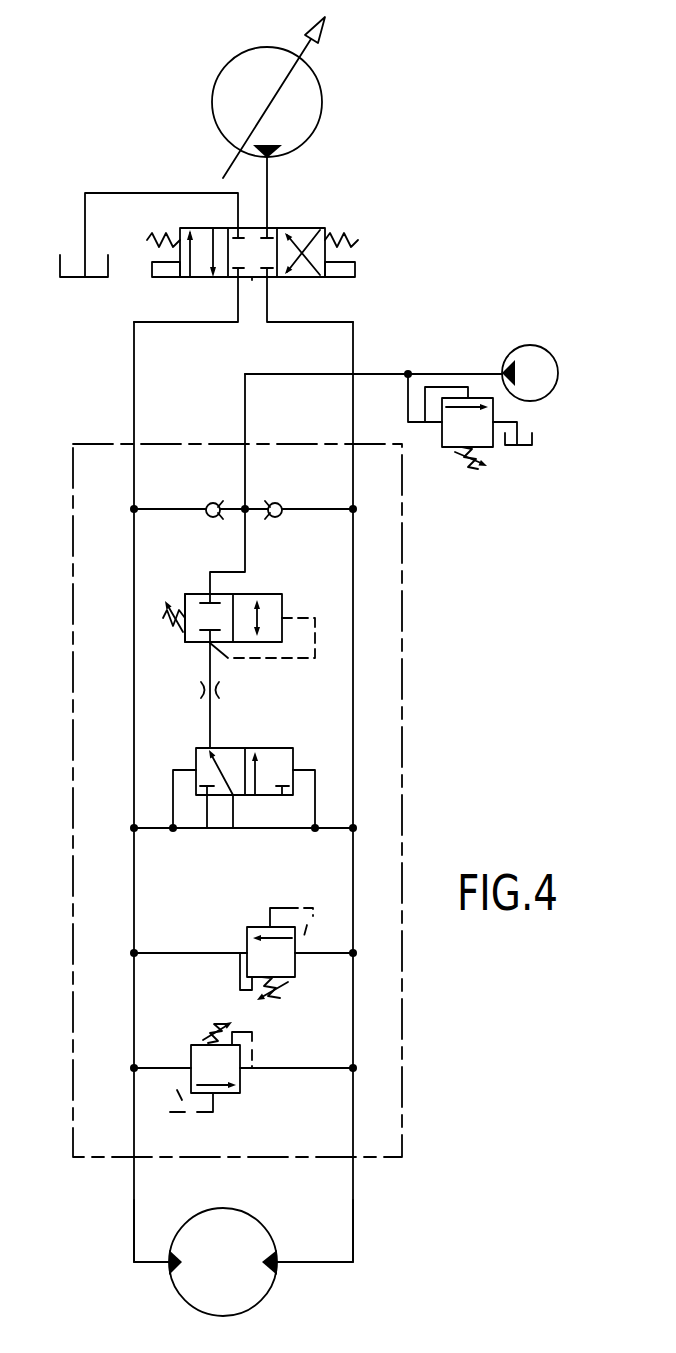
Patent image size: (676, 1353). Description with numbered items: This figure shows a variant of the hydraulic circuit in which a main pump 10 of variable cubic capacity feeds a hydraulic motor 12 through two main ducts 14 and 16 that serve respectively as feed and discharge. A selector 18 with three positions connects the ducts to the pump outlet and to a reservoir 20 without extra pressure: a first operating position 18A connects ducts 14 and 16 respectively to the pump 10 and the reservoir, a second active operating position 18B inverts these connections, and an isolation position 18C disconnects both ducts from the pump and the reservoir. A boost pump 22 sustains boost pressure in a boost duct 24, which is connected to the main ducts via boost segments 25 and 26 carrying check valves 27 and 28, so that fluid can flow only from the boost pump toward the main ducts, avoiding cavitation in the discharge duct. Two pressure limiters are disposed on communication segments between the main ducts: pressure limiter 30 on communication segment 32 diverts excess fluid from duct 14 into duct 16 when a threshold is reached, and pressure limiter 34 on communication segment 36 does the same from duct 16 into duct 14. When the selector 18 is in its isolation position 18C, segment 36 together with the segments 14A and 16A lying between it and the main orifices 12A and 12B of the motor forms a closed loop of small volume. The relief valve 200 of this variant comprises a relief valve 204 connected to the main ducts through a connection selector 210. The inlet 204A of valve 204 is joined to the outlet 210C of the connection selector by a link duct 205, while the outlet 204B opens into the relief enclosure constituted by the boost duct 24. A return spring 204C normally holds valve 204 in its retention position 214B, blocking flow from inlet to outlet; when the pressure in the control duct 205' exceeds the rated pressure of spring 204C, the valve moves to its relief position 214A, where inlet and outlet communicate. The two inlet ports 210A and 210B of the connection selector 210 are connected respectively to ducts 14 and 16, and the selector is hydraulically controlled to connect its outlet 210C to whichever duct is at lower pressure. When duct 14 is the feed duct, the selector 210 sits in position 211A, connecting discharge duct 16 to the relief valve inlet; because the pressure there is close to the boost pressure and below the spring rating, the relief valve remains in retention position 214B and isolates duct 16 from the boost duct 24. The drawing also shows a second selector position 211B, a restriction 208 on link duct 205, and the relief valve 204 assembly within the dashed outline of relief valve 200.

The main pump 10 is at (325, 97).
The hydraulic motor 12 is at (223, 1254).
The main orifice of the motor 12A is at (168, 1264).
The main orifice of the motor 12B is at (280, 1264).
The main duct 14 is at (134, 892).
The segment of duct 14 14A is at (134, 1214).
The main duct 16 is at (353, 886).
The segment of duct 16 16A is at (353, 1215).
The selector 18 is at (270, 253).
The first operating position 18A is at (293, 279).
The second active operating position 18B is at (222, 279).
The isolation position 18C is at (252, 280).
The reservoir 20 is at (84, 280).
The boost pump 22 is at (530, 345).
The boost duct 24 is at (308, 373).
The boost segment 25 is at (172, 509).
The boost segment 26 is at (312, 509).
The check valve 27 is at (213, 503).
The check valve 28 is at (275, 503).
The pressure limiter 30 is at (191, 1048).
The communication segment 32 is at (294, 1069).
The pressure limiter 34 is at (297, 968).
The communication segment 36 is at (187, 954).
The relief valve 200 is at (334, 688).
The relief valve 204 is at (238, 607).
The inlet of the relief valve 204A is at (210, 645).
The outlet of the valve 204B is at (190, 592).
The return spring 204C is at (163, 620).
The link duct 205 is at (243, 695).
The control duct 205' is at (296, 637).
The orifice 208 is at (213, 693).
The connection selector 210 is at (216, 774).
The inlet port 210A is at (208, 797).
The inlet port 210B is at (233, 797).
The outlet of the connection selector 210C is at (210, 747).
The position of the selector 211A is at (196, 762).
The second valve pilot connection 211B is at (285, 748).
The relief position 214A is at (243, 593).
The retention position 214B is at (185, 595).